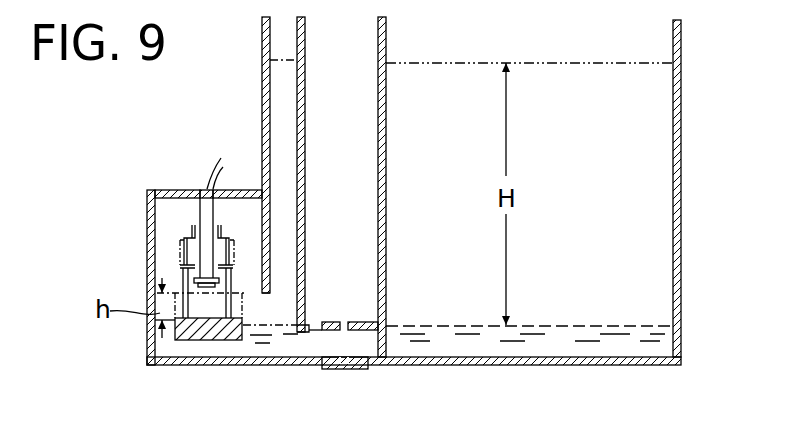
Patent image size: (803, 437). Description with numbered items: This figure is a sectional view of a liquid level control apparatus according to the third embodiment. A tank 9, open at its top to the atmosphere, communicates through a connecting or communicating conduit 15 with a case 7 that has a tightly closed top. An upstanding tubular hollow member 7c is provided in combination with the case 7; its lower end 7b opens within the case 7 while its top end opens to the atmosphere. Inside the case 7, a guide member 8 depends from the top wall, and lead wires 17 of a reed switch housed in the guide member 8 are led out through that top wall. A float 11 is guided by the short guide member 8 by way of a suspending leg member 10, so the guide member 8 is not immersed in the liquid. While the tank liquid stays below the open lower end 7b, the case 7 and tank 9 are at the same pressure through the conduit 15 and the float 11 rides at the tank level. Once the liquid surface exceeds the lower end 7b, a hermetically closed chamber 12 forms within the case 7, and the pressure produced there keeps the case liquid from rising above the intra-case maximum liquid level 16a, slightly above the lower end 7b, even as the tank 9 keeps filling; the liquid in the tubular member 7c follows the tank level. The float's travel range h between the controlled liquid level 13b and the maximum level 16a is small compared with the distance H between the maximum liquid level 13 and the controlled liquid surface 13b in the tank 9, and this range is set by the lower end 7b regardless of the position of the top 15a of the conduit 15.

The case 7 is at (147, 234).
The lower end 7b is at (270, 302).
The upstanding tubular hollow member 7c is at (262, 91).
The guide member 8 is at (200, 209).
The tank 9 is at (682, 95).
The suspending leg member 10 is at (233, 277).
The float 11 is at (207, 342).
The hermetically closed chamber 12 is at (165, 262).
The maximum liquid level 13 is at (655, 63).
The controlled liquid level 13b is at (630, 324).
The communicating conduit 15 is at (312, 366).
The top of the communicating conduit 15a is at (310, 331).
The intra-case maximum liquid level 16a is at (150, 278).
The lead wires 17 is at (207, 186).